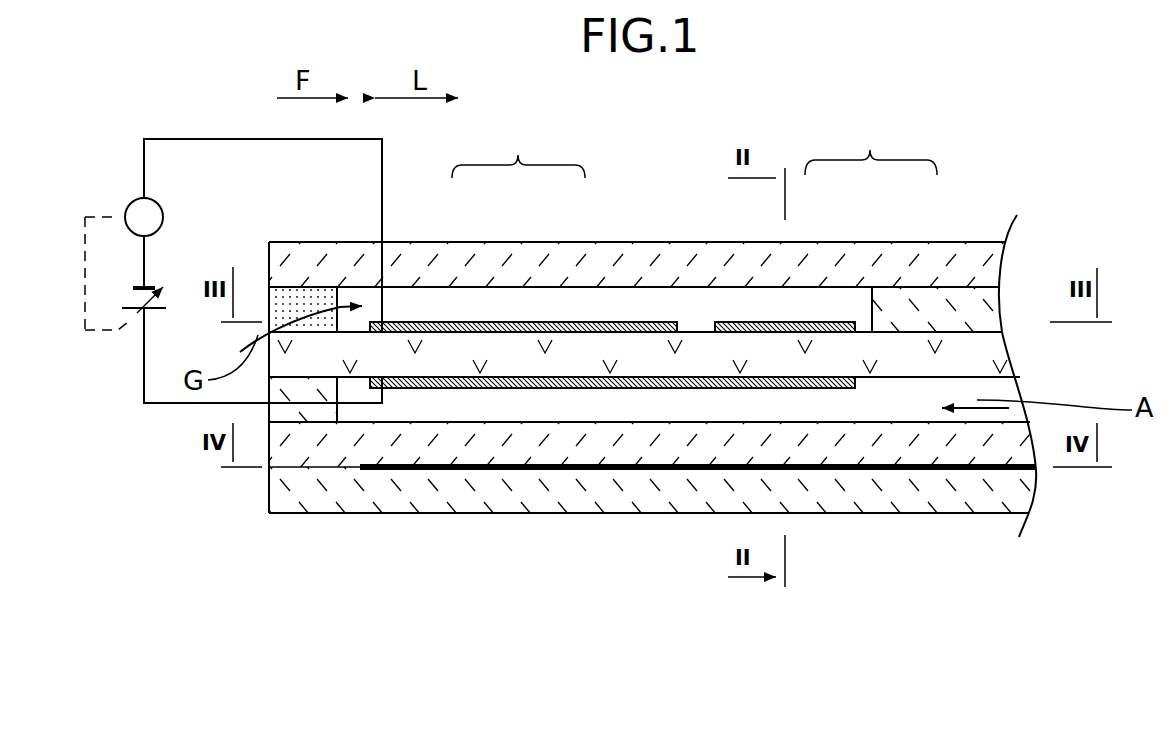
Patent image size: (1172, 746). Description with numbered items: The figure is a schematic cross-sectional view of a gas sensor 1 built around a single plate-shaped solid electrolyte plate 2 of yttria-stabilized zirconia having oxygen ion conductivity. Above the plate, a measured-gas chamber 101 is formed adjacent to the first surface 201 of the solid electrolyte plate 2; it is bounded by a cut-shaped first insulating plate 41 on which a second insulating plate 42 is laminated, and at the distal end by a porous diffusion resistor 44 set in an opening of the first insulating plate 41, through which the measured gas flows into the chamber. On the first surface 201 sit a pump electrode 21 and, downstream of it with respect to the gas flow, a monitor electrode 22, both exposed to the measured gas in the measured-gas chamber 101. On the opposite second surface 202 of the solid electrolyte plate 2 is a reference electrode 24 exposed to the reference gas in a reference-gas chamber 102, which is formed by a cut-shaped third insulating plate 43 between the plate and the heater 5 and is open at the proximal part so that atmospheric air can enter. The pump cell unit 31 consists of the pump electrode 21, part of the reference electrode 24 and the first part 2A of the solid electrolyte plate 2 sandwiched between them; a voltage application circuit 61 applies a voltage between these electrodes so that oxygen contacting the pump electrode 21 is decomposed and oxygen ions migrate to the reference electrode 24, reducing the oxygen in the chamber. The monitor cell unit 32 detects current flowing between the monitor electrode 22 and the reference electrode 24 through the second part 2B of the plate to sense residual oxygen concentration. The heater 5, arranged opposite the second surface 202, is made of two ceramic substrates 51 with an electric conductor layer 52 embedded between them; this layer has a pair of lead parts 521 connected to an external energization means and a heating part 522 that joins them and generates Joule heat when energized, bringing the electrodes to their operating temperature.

The gas sensor 1 is at (1012, 188).
The solid electrolyte plate 2 is at (654, 273).
The first part of the solid electrolyte plate 2A is at (486, 348).
The second part of the solid electrolyte plate 2B is at (798, 350).
The heater 5 is at (659, 547).
The pump electrode 21 is at (450, 322).
The monitor electrode 22 is at (762, 323).
The reference electrode 24 is at (533, 378).
The pump cell unit 31 is at (523, 227).
The monitor cell unit 32 is at (826, 225).
The first insulating plate 41 is at (945, 298).
The second insulating plate 42 is at (402, 265).
The third insulating plate 43 is at (308, 412).
The diffusion resistor 44 is at (295, 300).
The ceramic substrates 51 is at (822, 497).
The electric conductor layer 52 is at (700, 569).
The voltage application circuit 61 is at (128, 158).
The measured-gas chamber 101 is at (607, 305).
The reference-gas chamber 102 is at (570, 402).
The first surface 201 is at (979, 323).
The second surface 202 is at (962, 382).
The lead parts 521 is at (959, 472).
The heating part 522 is at (623, 471).